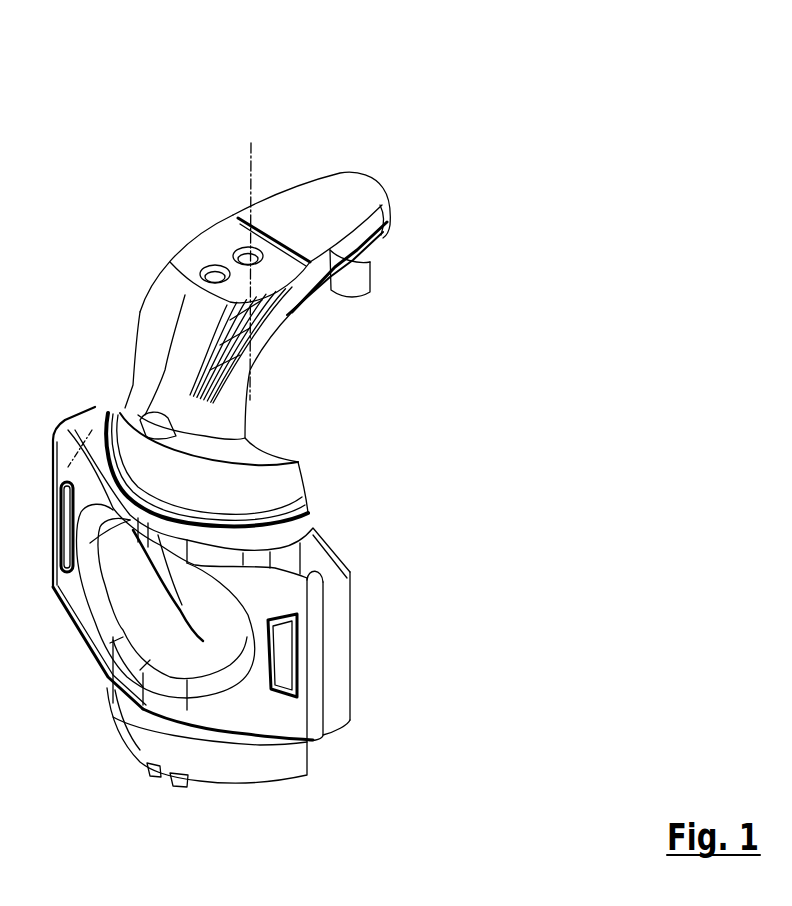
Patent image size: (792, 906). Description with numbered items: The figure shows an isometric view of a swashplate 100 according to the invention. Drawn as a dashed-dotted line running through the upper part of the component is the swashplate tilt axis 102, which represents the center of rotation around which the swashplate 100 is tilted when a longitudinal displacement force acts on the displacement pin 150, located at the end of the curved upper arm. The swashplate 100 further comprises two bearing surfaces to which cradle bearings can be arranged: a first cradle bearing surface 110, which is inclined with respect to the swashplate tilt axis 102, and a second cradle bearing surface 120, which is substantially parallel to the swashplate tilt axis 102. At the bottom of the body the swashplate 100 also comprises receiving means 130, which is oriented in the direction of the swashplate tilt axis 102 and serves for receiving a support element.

The swashplate 100 is at (398, 623).
The swashplate tilt axis 102 is at (253, 172).
The first cradle bearing surface 110 is at (307, 483).
The second cradle bearing surface 120 is at (288, 758).
The receiving means 130 is at (173, 777).
The displacement pin 150 is at (363, 283).